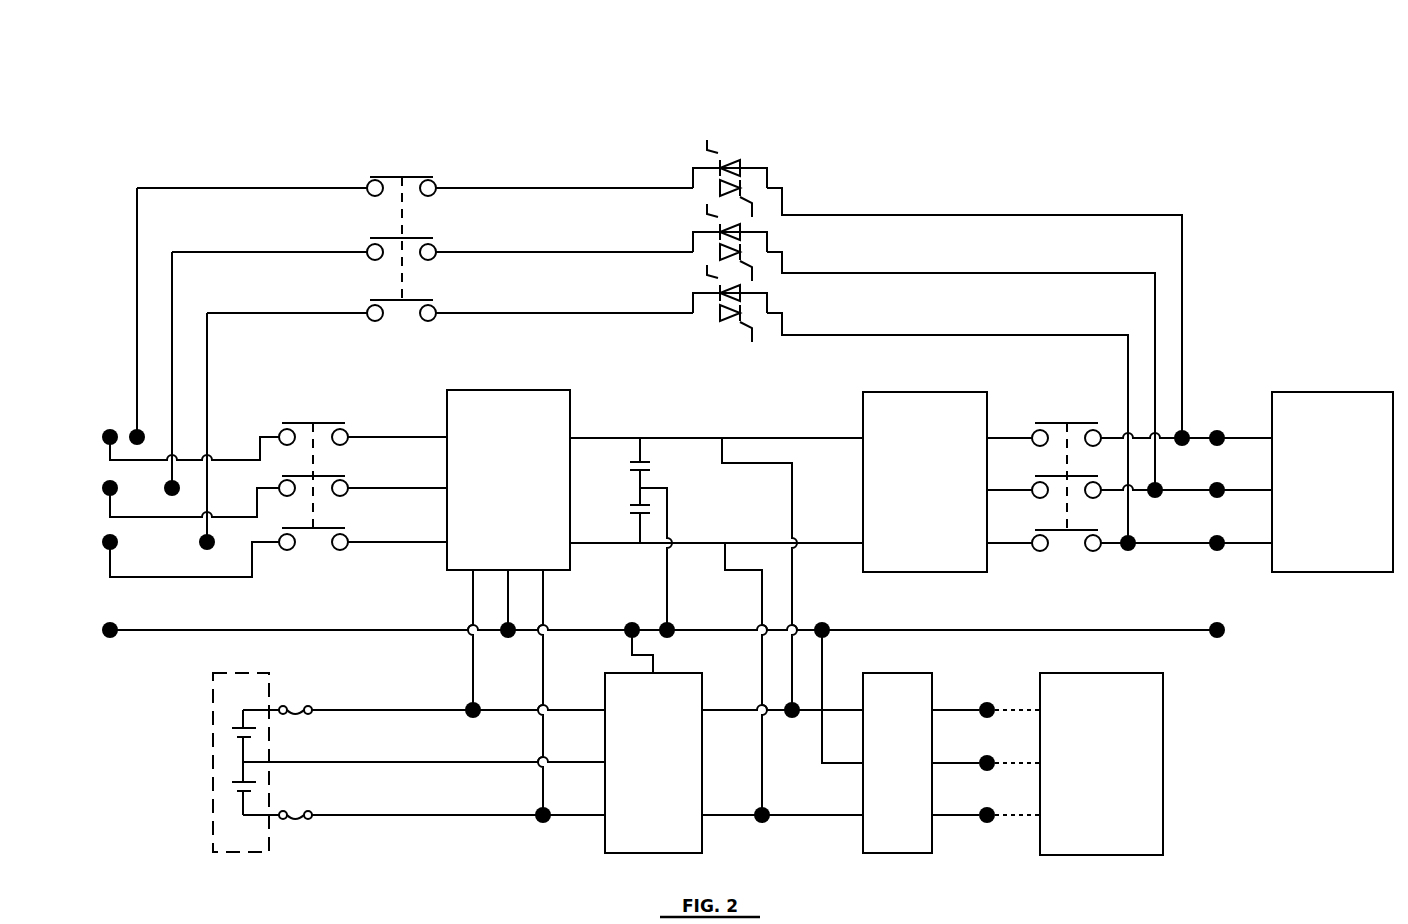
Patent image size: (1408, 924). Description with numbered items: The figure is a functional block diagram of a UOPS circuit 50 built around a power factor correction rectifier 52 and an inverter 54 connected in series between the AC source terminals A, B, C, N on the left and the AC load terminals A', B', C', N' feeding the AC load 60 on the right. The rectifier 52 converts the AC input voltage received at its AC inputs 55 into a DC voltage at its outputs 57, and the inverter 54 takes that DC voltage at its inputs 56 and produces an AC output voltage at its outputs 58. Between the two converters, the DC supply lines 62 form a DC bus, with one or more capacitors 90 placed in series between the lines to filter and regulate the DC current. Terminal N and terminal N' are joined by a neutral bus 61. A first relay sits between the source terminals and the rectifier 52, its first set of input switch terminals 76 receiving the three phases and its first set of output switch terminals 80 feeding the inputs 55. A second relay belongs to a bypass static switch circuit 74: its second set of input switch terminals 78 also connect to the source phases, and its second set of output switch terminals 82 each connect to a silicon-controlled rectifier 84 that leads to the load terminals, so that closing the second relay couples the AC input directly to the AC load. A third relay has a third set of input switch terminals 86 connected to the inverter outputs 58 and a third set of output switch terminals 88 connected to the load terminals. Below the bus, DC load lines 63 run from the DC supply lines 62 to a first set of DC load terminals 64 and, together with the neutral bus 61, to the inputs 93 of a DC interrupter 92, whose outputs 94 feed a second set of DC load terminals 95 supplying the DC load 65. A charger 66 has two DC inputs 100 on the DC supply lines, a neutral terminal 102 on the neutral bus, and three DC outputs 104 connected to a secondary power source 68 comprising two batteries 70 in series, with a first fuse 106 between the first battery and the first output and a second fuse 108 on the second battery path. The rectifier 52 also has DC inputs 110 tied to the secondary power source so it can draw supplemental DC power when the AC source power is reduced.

The UOPS circuit 50 is at (186, 54).
The power factor correction (PFC) rectifier 52 is at (447, 418).
The inverter 54 is at (863, 414).
The AC inputs of the PFC rectifier 55 is at (445, 442).
The DC inputs of the inverter 56 is at (862, 465).
The DC outputs of the PFC rectifier 57 is at (573, 442).
The AC outputs of the inverter 58 is at (988, 438).
The AC load 60 is at (1312, 392).
The neutral bus 61 is at (642, 616).
The DC supply lines 62 is at (817, 543).
The DC load lines 63 is at (762, 605).
The first set of DC load terminals 64 is at (763, 812).
The DC load 65 is at (1090, 673).
The charger 66 is at (702, 680).
The secondary power source 68 is at (250, 673).
The batteries 70 is at (240, 728).
The bypass static switch circuit 74 is at (328, 151).
The first set of input switch terminals 76 is at (284, 534).
The second set of input switch terminals 78 is at (370, 306).
The first set of output switch terminals 80 is at (348, 534).
The second set of output switch terminals 82 is at (436, 306).
The silicon-controlled rectifier (SCR) 84 is at (707, 151).
The third set of input switch terminals 86 is at (1038, 535).
The third set of output switch terminals 88 is at (1093, 535).
The capacitors 90 is at (640, 505).
The DC interrupter 92 is at (894, 673).
The inputs of the DC interrupter 93 is at (862, 716).
The outputs of the DC interrupter 94 is at (937, 808).
The second set of DC load terminals 95 is at (990, 805).
The DC inputs of the charger 100 is at (703, 814).
The neutral terminal of the charger 102 is at (632, 664).
The DC outputs of the charger 104 is at (605, 716).
The first fuse 106 is at (309, 706).
The fuse 108 is at (310, 822).
The DC inputs of the PFC rectifier 110 is at (460, 571).